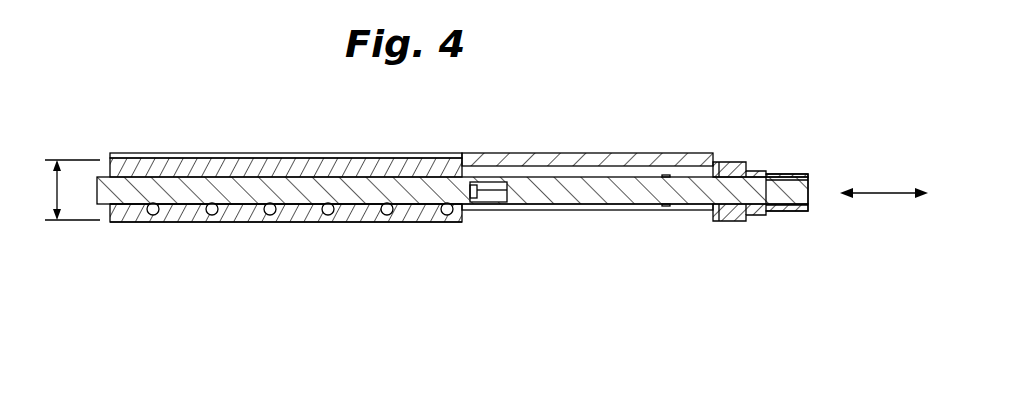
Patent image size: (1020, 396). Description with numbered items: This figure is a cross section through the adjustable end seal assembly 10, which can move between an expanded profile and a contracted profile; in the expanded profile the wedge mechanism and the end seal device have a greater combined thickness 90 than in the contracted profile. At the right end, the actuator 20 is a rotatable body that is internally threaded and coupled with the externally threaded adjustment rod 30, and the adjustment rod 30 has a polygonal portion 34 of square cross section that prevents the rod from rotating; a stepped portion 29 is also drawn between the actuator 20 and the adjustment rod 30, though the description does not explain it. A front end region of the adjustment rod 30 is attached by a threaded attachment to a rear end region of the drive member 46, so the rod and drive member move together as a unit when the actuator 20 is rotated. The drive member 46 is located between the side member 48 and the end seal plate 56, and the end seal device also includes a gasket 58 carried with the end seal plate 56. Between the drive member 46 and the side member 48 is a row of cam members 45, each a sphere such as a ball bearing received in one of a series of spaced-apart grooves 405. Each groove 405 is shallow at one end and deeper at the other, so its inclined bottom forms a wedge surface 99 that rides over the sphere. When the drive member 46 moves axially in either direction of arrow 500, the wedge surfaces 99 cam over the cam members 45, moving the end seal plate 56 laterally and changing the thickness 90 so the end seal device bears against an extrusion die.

The adjustable end seal assembly 10 is at (116, 314).
The actuator 20 is at (755, 171).
The coupling step 29 is at (787, 211).
The adjustment rod 30 is at (793, 182).
The polygonal portion 34 is at (650, 193).
The cam members 45 is at (328, 203).
The drive member 46 is at (417, 190).
The side member 48 is at (235, 222).
The end seal plate 56 is at (400, 168).
The gasket 58 is at (363, 153).
The combined thickness 90 is at (35, 168).
The wedge surfaces 99 is at (140, 222).
The grooves 405 is at (123, 222).
The arrow 500 is at (880, 200).